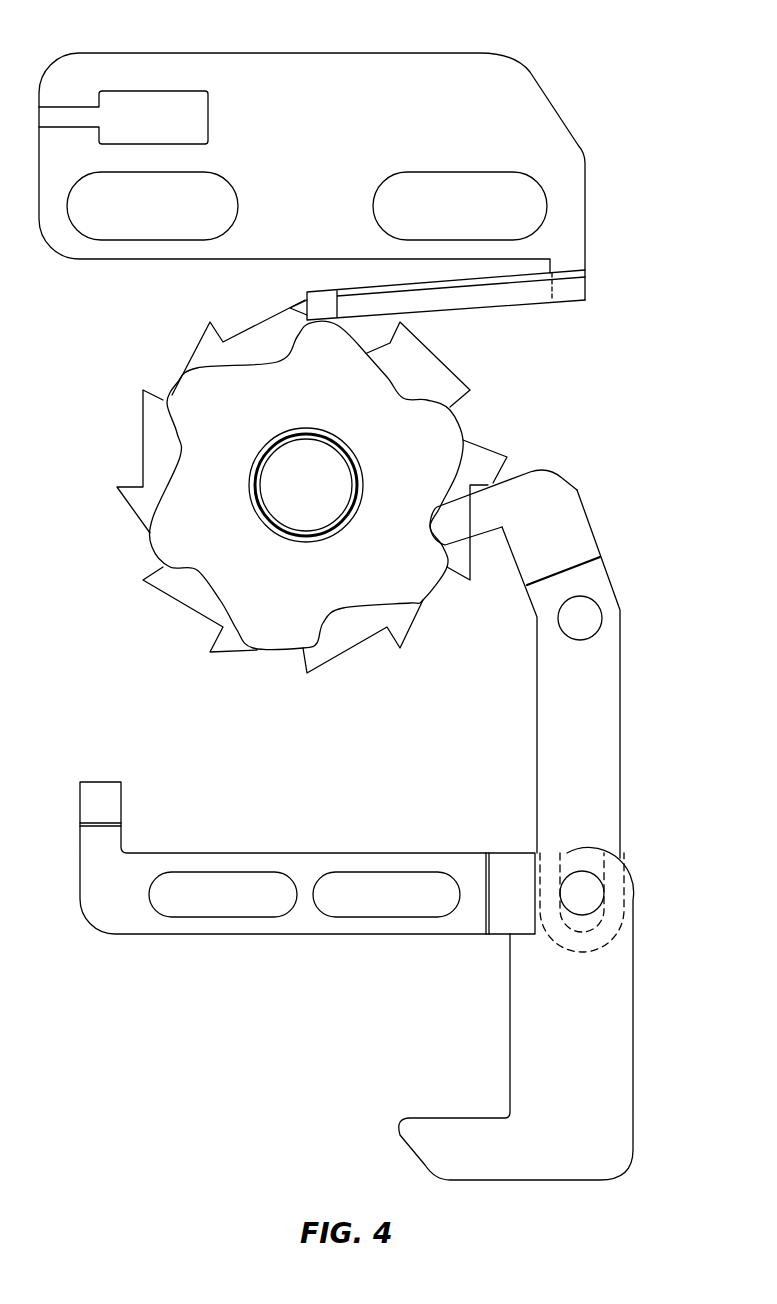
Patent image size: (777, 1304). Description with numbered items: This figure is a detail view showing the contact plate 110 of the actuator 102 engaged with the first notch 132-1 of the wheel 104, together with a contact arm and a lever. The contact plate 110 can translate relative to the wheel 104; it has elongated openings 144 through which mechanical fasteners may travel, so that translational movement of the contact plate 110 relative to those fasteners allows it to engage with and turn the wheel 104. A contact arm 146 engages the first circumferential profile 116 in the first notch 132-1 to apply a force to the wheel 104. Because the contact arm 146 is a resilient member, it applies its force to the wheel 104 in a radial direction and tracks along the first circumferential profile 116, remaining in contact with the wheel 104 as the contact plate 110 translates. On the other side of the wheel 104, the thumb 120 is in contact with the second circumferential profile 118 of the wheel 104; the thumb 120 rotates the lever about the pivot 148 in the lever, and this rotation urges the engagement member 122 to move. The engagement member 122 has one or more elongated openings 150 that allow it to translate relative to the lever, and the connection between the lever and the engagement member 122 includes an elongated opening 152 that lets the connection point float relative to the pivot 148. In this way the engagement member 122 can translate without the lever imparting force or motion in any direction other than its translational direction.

The actuator 102 is at (615, 63).
The wheel 104 is at (147, 537).
The contact plate 110 is at (430, 73).
The first circumferential profile 116 is at (482, 458).
The second circumferential profile 118 is at (517, 553).
The thumb 120 is at (558, 500).
The engagement member 122 is at (610, 1045).
The first notch 132-1 is at (290, 308).
The elongated openings 144 is at (528, 212).
The contact arm 146 is at (527, 290).
The pivot 148 is at (593, 620).
The elongated openings 150 is at (448, 893).
The elongated opening 152 is at (605, 917).